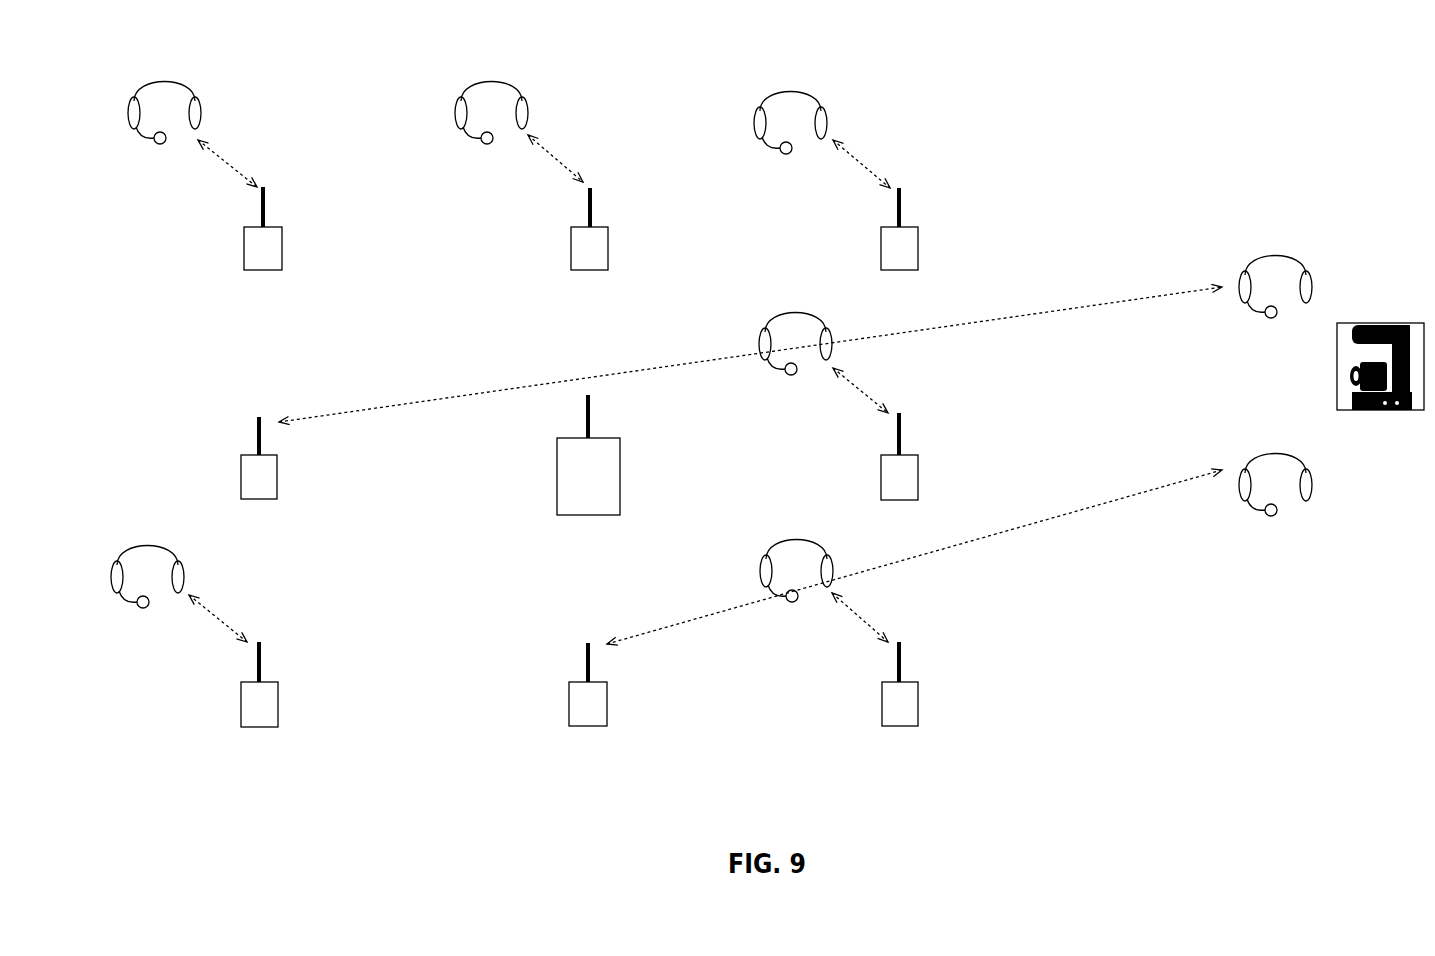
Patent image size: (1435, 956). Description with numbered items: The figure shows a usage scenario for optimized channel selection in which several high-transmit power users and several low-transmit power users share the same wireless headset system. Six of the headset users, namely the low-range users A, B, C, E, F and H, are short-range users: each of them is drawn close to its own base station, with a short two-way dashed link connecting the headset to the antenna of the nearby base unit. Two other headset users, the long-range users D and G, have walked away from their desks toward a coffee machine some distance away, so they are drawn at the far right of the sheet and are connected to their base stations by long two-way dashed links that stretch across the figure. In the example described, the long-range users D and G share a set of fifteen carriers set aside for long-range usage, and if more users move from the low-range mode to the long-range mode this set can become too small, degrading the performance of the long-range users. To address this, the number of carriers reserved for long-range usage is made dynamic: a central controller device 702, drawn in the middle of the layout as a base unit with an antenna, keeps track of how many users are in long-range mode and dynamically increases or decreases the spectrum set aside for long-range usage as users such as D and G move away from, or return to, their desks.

The central controller device 702 is at (588, 455).
The low-range user A is at (164, 84).
The low-range user B is at (491, 84).
The low-range user C is at (790, 95).
The long-range user D is at (1275, 260).
The low-range user E is at (795, 315).
The low-range user F is at (147, 550).
The long-range user G is at (1275, 459).
The low-range user H is at (796, 542).